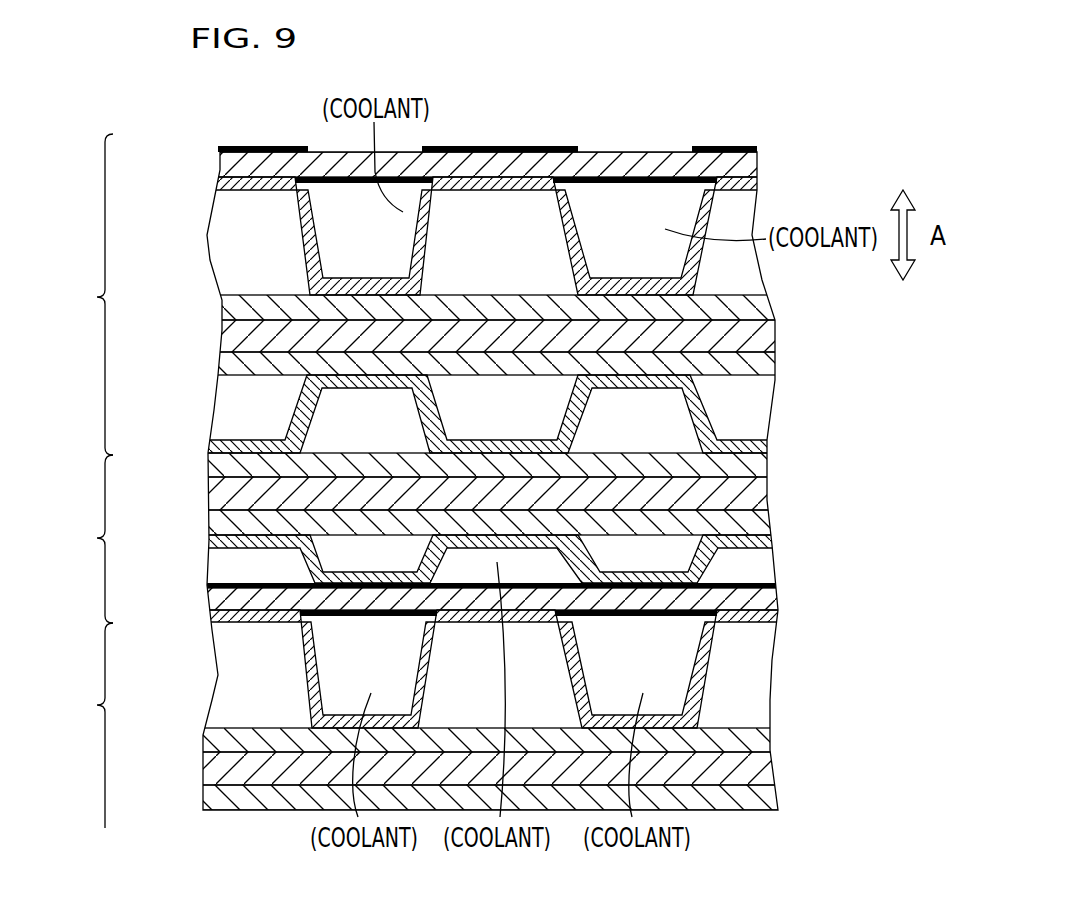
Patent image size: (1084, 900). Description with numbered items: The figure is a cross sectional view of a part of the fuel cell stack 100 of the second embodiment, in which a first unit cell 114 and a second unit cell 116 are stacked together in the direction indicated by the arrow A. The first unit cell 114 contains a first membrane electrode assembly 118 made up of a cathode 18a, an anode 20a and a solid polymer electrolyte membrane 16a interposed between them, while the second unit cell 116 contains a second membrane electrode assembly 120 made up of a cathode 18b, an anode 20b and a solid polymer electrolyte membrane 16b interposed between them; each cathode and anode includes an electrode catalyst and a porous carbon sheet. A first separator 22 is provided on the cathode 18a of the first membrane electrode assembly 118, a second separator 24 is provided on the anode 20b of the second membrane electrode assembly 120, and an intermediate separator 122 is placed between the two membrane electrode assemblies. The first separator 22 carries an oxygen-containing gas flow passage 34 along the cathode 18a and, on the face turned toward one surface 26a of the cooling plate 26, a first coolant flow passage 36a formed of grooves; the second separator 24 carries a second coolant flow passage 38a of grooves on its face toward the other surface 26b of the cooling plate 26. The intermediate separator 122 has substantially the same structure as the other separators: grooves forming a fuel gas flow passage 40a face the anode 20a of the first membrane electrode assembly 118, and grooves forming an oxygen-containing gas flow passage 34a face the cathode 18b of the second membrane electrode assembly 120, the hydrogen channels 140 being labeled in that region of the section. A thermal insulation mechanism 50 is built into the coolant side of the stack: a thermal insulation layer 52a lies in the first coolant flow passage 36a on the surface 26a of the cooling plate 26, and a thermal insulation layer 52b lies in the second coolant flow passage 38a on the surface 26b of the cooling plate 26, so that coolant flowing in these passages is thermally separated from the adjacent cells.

The fuel cell stack 100 is at (566, 70).
The first unit cell 114 is at (79, 481).
The second unit cell 116 is at (79, 539).
The first membrane electrode assembly 118 is at (782, 335).
The second membrane electrode assembly 120 is at (770, 495).
The intermediate separator 122 is at (770, 443).
The second separator 24 is at (772, 537).
The cooling plate 26 is at (661, 147).
The one surface of the cooling plate 26a is at (478, 184).
The other surface of the cooling plate 26b is at (618, 150).
The first separator 22 is at (764, 191).
The thermal insulation mechanism 50 is at (526, 140).
The thermal insulation layer 52a is at (357, 183).
The thermal insulation layer 52b is at (276, 147).
The oxygen-containing gas flow passage 34 is at (498, 459).
The oxygen-containing gas flow passage 34a is at (500, 417).
The first coolant flow passage 36a is at (495, 446).
The second coolant flow passage 38a is at (460, 635).
The fuel gas flow passage 40a is at (494, 405).
The fuel gas flow channel 140 is at (515, 556).
The cathode 18a is at (222, 308).
The solid polymer electrolyte membrane 16a is at (222, 335).
The anode 20a is at (222, 363).
The cathode 18b is at (215, 466).
The solid polymer electrolyte membrane 16b is at (215, 493).
The anode 20b is at (215, 521).